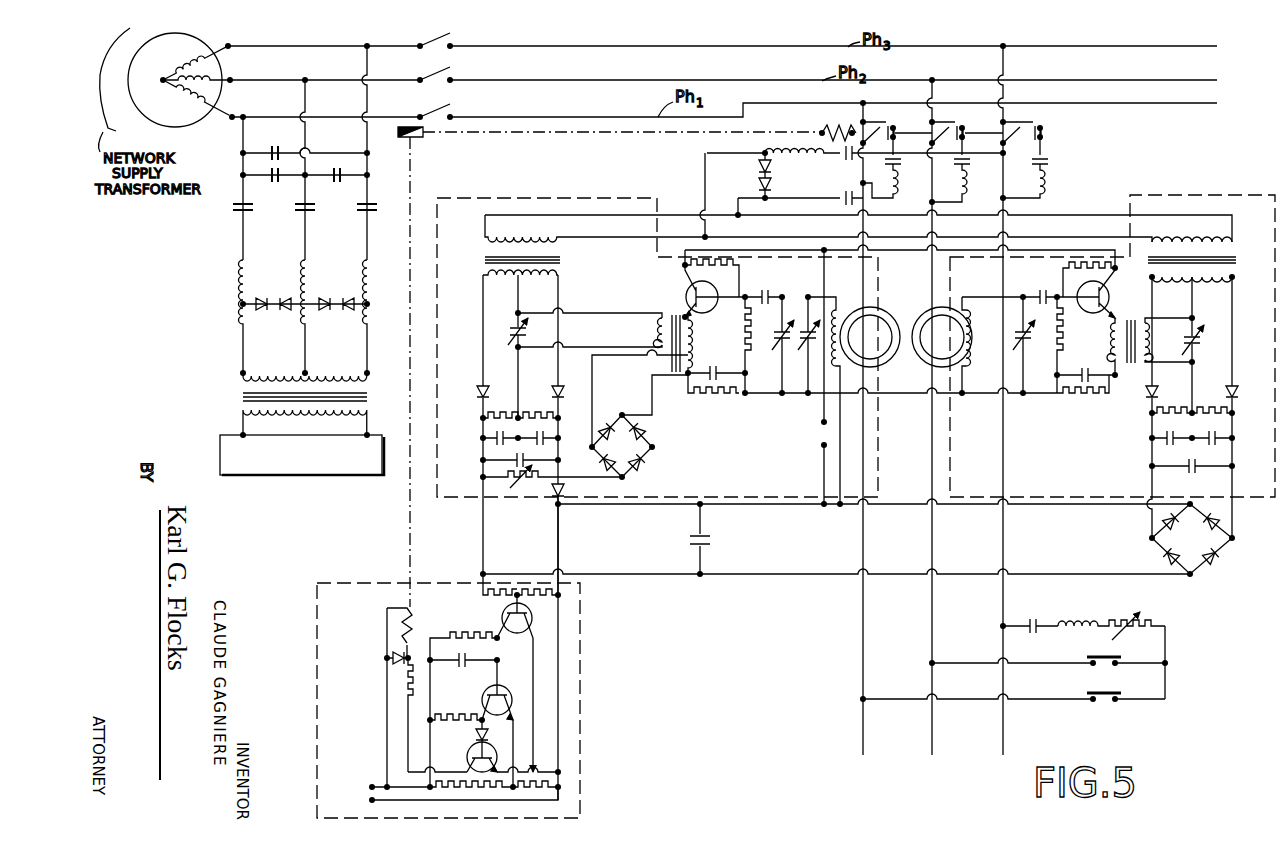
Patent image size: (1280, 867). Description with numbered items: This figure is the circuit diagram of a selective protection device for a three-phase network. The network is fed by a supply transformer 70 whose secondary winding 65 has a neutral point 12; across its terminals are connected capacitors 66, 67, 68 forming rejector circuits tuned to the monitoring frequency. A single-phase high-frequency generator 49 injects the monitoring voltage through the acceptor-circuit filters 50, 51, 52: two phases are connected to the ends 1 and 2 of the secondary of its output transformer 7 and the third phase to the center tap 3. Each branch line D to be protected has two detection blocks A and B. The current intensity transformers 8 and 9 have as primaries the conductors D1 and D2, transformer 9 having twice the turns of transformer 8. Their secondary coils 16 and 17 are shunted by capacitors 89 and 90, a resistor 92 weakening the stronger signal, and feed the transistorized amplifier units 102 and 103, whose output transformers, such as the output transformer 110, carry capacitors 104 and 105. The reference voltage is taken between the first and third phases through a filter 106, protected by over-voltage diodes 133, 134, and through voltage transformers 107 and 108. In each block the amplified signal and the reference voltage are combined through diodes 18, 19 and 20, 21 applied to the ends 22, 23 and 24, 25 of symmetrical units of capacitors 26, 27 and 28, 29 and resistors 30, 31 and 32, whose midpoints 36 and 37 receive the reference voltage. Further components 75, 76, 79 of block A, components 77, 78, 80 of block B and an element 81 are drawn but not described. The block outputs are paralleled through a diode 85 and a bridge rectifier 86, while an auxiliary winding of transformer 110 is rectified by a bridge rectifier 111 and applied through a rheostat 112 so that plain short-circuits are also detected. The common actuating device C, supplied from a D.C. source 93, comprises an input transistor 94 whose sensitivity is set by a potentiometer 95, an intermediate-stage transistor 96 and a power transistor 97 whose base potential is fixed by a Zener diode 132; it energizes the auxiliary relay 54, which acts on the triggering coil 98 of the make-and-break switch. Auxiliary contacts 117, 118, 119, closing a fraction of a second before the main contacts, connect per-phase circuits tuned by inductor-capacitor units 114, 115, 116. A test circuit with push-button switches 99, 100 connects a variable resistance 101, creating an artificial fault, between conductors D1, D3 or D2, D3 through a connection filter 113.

The neutral point 12 is at (164, 77).
The secondary winding 65 is at (222, 87).
The network supply transformer 70 is at (134, 106).
The capacitor 66 is at (274, 145).
The capacitor 67 is at (276, 182).
The capacitor 68 is at (338, 182).
The filter 50 is at (240, 207).
The filter 51 is at (302, 207).
The filter 52 is at (364, 207).
The end of secondary winding 1 is at (242, 372).
The end of secondary winding 2 is at (304, 372).
The center tap 3 is at (366, 372).
The output transformer 7 is at (368, 398).
The single-phase generator 49 is at (220, 440).
The triggering coil 98 is at (826, 128).
The auxiliary contact 117 is at (910, 125).
The auxiliary contact 118 is at (978, 125).
The auxiliary contact 119 is at (1058, 125).
The inductor-capacitor unit 114 is at (895, 190).
The inductor-capacitor unit 115 is at (965, 190).
The inductor-capacitor unit 116 is at (1043, 190).
The diode 133 is at (760, 166).
The diode 134 is at (760, 184).
The filter 106 is at (814, 157).
The voltage transformer 107 is at (484, 260).
The voltage transformer 108 is at (1233, 258).
The capacitor 104 is at (512, 328).
The capacitor 105 is at (1188, 343).
The transistorized amplifier unit 102 is at (692, 286).
The transistorized amplifier unit 103 is at (1106, 292).
The output transformer 110 is at (668, 316).
The coil 16 is at (836, 305).
The current intensity transformer 8 is at (877, 313).
The current intensity transformer 9 is at (936, 313).
The coil 17 is at (970, 341).
The capacitor 89 is at (806, 331).
The resistor 92 is at (780, 338).
The capacitor 90 is at (1026, 342).
The battery 81 is at (818, 436).
The diode 18 is at (479, 390).
The diode 19 is at (555, 390).
The resistor 30 is at (498, 412).
The midpoint 36 is at (521, 416).
The resistor 31 is at (560, 414).
The end terminal 22 is at (481, 420).
The end terminal 23 is at (560, 420).
The capacitor 26 is at (481, 440).
The capacitor 27 is at (560, 440).
The capacitor 79 is at (515, 459).
The terminal 76 is at (560, 460).
The terminal 75 is at (481, 461).
The rheostat 112 is at (505, 480).
The rectifier 85 is at (566, 492).
The bridge rectifier 111 is at (645, 453).
The diode 21 is at (1148, 393).
The diode 20 is at (1236, 394).
The midpoint 37 is at (1168, 412).
The resistor 32 is at (1210, 412).
The end terminal 25 is at (1150, 416).
The end terminal 24 is at (1236, 416).
The capacitor 29 is at (1150, 438).
The capacitor 28 is at (1236, 438).
The terminal 78 is at (1150, 467).
The terminal 77 is at (1236, 467).
The capacitor 80 is at (1194, 473).
The rectifier 86 is at (1165, 532).
The auxiliary relay 54 is at (387, 634).
The input transistor 94 is at (503, 611).
The intermediate-stage transistor 96 is at (519, 689).
The Zener diode 132 is at (476, 738).
The power transistor 97 is at (470, 762).
The D.C. source 93 is at (366, 787).
The potentiometer 95 is at (545, 792).
The connection filter 113 is at (1086, 624).
The variable resistance 101 is at (1127, 625).
The push-button switch 99 is at (1092, 660).
The push-button switch 100 is at (1092, 697).
The detection block A is at (592, 205).
The detection block B is at (1170, 196).
The actuating device C is at (582, 640).
The branch line D is at (896, 600).
The branch conductor D1 is at (862, 699).
The branch conductor D2 is at (929, 663).
The branch conductor D3 is at (1003, 626).